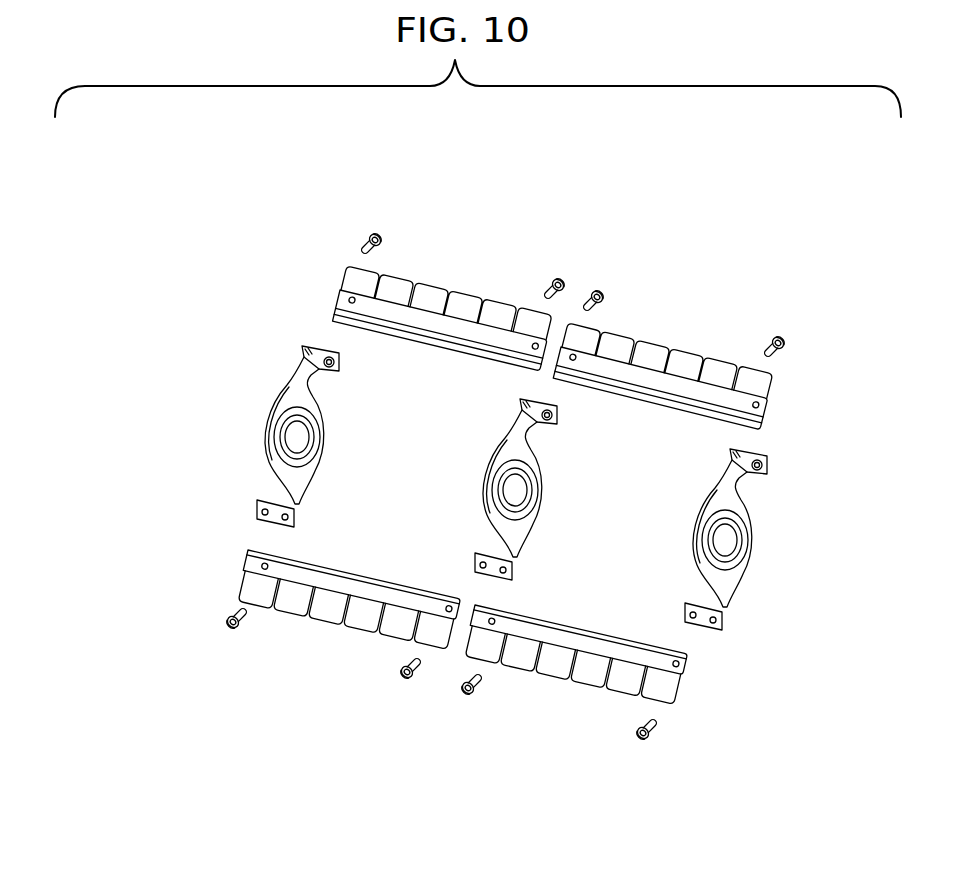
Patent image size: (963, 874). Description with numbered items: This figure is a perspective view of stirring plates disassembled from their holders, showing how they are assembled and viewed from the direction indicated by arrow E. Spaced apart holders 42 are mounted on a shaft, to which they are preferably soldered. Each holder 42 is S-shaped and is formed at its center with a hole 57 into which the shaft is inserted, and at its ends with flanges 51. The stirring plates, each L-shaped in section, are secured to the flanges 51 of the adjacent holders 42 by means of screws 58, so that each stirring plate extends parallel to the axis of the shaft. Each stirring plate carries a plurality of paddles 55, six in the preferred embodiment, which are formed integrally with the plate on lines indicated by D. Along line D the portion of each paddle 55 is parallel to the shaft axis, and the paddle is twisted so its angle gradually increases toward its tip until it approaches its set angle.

The holder 42 is at (338, 400).
The flange 51 is at (340, 356).
The paddle 55 is at (452, 300).
The hole 57 is at (305, 437).
The screw 58 is at (378, 232).
The line D is at (495, 312).
The arrow indicating viewing direction E is at (134, 527).